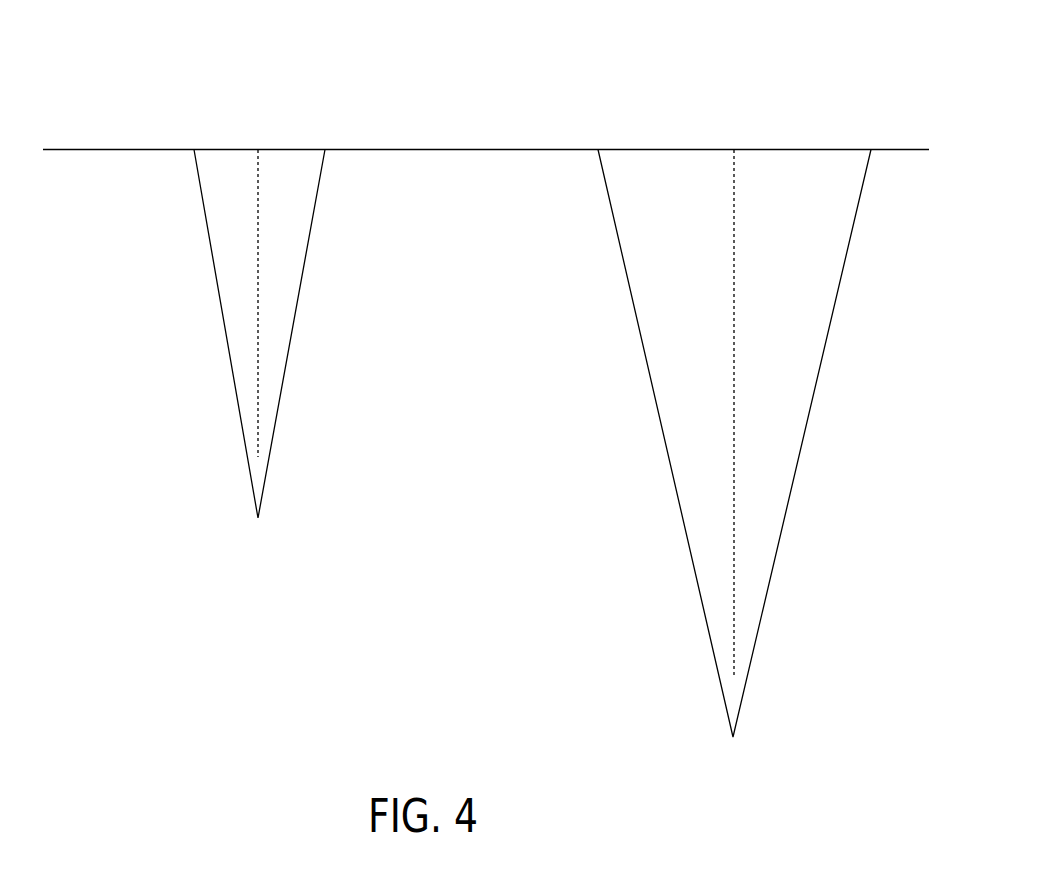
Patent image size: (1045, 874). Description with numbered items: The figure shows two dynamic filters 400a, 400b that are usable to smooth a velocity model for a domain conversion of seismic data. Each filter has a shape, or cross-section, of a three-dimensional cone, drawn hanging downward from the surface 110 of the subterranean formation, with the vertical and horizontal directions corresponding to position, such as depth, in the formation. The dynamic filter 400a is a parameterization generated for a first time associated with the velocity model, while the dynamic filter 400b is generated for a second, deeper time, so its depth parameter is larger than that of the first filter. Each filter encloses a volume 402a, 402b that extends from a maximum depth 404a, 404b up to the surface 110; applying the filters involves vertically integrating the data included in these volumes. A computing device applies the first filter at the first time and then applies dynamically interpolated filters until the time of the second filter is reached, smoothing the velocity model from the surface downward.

The surface 110 is at (447, 148).
The dynamic filter 400a is at (190, 118).
The volume 402a is at (297, 163).
The maximum depth 404a is at (257, 519).
The dynamic filter 400b is at (606, 128).
The volume 402b is at (823, 165).
The maximum depth 404b is at (732, 737).